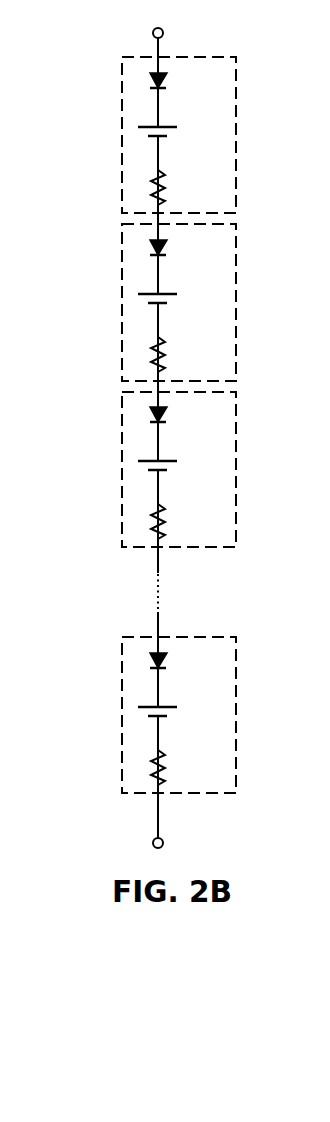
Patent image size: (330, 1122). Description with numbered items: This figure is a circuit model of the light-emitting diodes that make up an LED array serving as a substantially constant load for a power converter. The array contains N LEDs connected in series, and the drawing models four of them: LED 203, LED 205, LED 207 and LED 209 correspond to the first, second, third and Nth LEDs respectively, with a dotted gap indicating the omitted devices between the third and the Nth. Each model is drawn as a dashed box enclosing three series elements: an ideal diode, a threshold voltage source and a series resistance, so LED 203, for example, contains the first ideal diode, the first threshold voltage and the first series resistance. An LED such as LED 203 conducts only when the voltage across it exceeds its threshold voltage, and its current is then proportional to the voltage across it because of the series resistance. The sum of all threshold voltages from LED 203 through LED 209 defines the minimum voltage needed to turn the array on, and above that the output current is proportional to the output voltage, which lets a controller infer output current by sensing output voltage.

The LED 203 is at (121, 122).
The LED 205 is at (121, 282).
The LED 207 is at (121, 449).
The LED 209 is at (121, 700).